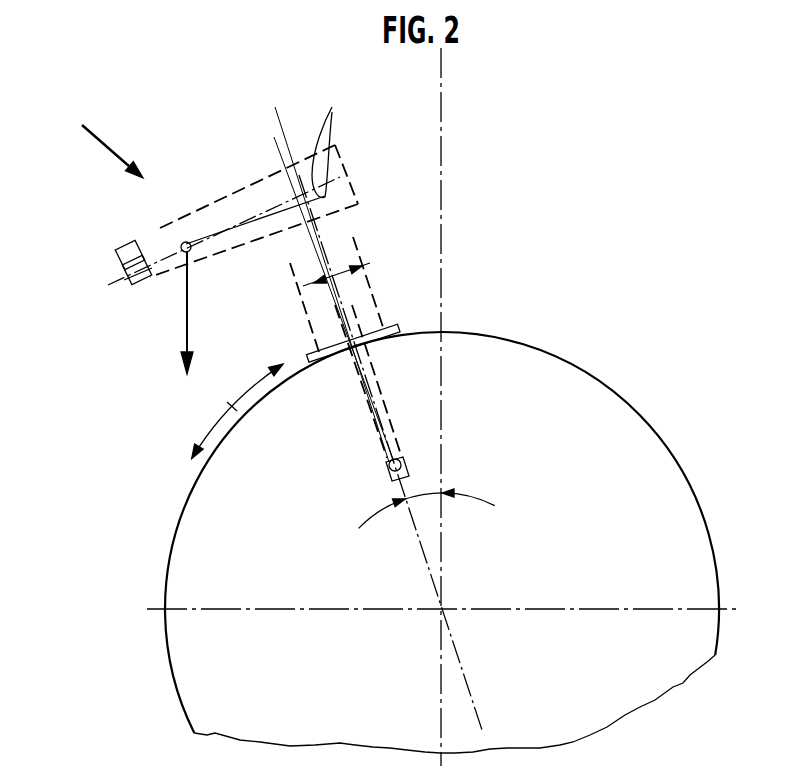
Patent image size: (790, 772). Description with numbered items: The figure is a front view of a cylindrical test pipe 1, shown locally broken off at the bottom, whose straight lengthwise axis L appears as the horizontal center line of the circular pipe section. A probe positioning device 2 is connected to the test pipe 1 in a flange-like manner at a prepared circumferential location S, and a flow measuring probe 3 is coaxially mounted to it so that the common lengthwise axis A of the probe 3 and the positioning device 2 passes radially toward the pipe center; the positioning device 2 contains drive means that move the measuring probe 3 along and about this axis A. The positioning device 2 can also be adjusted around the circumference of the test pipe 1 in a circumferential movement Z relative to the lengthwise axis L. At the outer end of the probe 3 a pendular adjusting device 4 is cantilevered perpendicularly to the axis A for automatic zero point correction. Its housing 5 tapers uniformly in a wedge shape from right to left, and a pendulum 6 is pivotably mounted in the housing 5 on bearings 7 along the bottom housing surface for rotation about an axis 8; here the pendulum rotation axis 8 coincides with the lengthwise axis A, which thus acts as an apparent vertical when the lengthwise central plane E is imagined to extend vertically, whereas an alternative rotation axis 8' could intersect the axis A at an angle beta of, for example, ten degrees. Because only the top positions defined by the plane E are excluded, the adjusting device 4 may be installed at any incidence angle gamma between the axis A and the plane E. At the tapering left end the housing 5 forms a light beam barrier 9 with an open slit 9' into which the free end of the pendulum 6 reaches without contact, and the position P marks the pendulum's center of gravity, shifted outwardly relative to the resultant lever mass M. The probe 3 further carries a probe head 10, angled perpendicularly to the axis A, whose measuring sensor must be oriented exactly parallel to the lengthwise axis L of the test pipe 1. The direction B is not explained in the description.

The test pipe 1 is at (672, 446).
The probe positioning device 2 is at (368, 262).
The flow measuring probe 3 is at (387, 410).
The pendular adjusting device 4 is at (171, 214).
The housing 5 is at (347, 173).
The pendulum 6 is at (233, 248).
The bearings 7 is at (326, 142).
The axis 8 is at (303, 264).
The rotation axis of the pendulum 8' is at (303, 289).
The light beam barrier 9 is at (99, 262).
The open slit 9' is at (102, 297).
The probe head 10 is at (387, 470).
The lengthwise axis A is at (407, 560).
The feed direction B is at (97, 143).
The lengthwise central plane E is at (442, 132).
The lengthwise axis L is at (442, 606).
The lever mass M is at (183, 326).
The center of gravity P is at (183, 251).
The circumferential location S is at (395, 323).
The circumferential movement Z is at (213, 423).
The angle beta is at (350, 274).
The installation incidence angle gamma is at (422, 492).